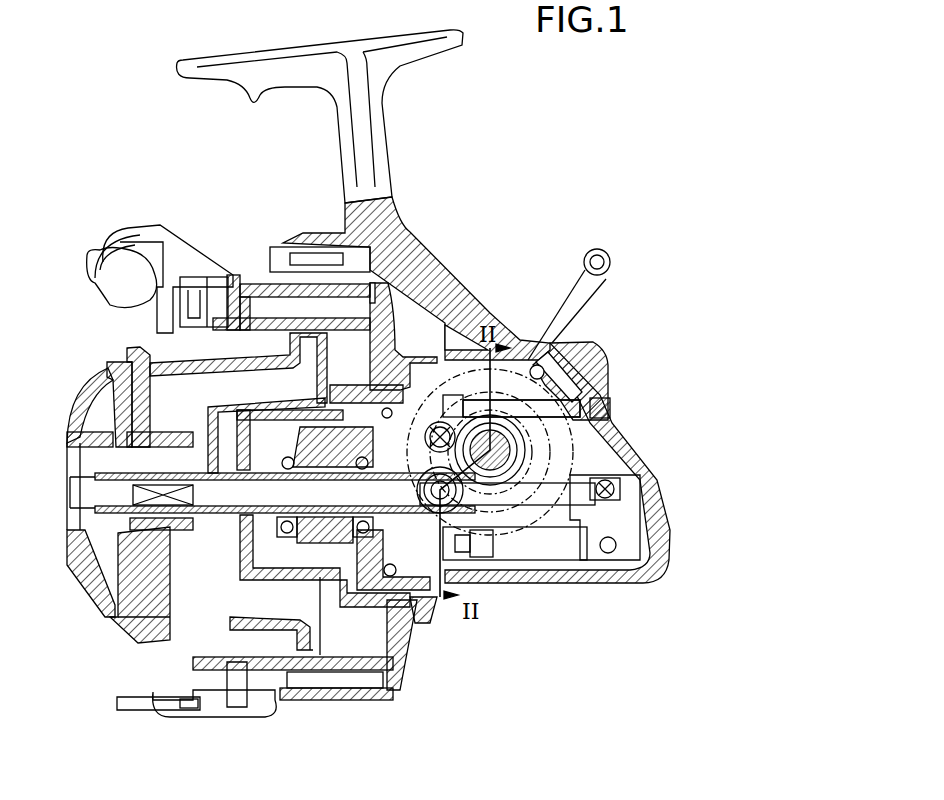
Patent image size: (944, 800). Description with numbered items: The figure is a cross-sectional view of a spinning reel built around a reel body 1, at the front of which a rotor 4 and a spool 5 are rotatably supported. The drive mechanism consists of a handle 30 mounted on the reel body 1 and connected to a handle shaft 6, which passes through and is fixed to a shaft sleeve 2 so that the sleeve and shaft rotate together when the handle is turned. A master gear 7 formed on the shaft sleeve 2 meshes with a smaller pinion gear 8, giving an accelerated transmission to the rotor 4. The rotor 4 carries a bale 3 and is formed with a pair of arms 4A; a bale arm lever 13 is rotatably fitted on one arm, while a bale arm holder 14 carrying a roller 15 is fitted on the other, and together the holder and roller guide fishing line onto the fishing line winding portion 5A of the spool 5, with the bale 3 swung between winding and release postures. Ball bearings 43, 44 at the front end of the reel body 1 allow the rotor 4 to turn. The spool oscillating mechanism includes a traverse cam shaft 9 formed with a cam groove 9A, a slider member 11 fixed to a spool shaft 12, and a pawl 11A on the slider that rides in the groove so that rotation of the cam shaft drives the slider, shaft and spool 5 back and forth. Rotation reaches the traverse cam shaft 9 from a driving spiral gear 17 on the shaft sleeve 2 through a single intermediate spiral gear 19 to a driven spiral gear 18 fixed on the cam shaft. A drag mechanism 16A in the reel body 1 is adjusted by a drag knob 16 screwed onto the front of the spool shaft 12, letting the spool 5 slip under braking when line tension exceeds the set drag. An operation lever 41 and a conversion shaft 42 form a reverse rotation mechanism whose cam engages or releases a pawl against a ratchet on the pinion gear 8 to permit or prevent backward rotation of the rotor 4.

The reel body 1 is at (660, 472).
The shaft sleeve 2 is at (497, 450).
The bale 3 is at (157, 322).
The rotor 4 is at (400, 690).
The arm 4A is at (262, 283).
The spool 5 is at (115, 637).
The fishing line winding portion 5A is at (168, 627).
The handle shaft 6 is at (538, 365).
The master gear 7 is at (478, 345).
The pinion gear 8 is at (420, 605).
The traverse cam shaft 9 is at (525, 545).
The cam groove 9A is at (487, 560).
The slider member 11 is at (635, 517).
The pawl 11A is at (609, 553).
The spool shaft 12 is at (578, 490).
The bale arm lever 13 is at (165, 245).
The bale arm holder 14 is at (255, 717).
The roller 15 is at (128, 255).
The drag knob 16 is at (68, 430).
The drag mechanism 16A is at (160, 545).
The driving spiral gear 17 is at (540, 450).
The driven spiral gear 18 is at (443, 575).
The intermediate spiral gear 19 is at (507, 505).
The handle 30 is at (583, 278).
The operation lever 41 is at (600, 355).
The conversion shaft 42 is at (610, 407).
The ball bearing 43 is at (245, 430).
The ball bearing 44 is at (335, 435).